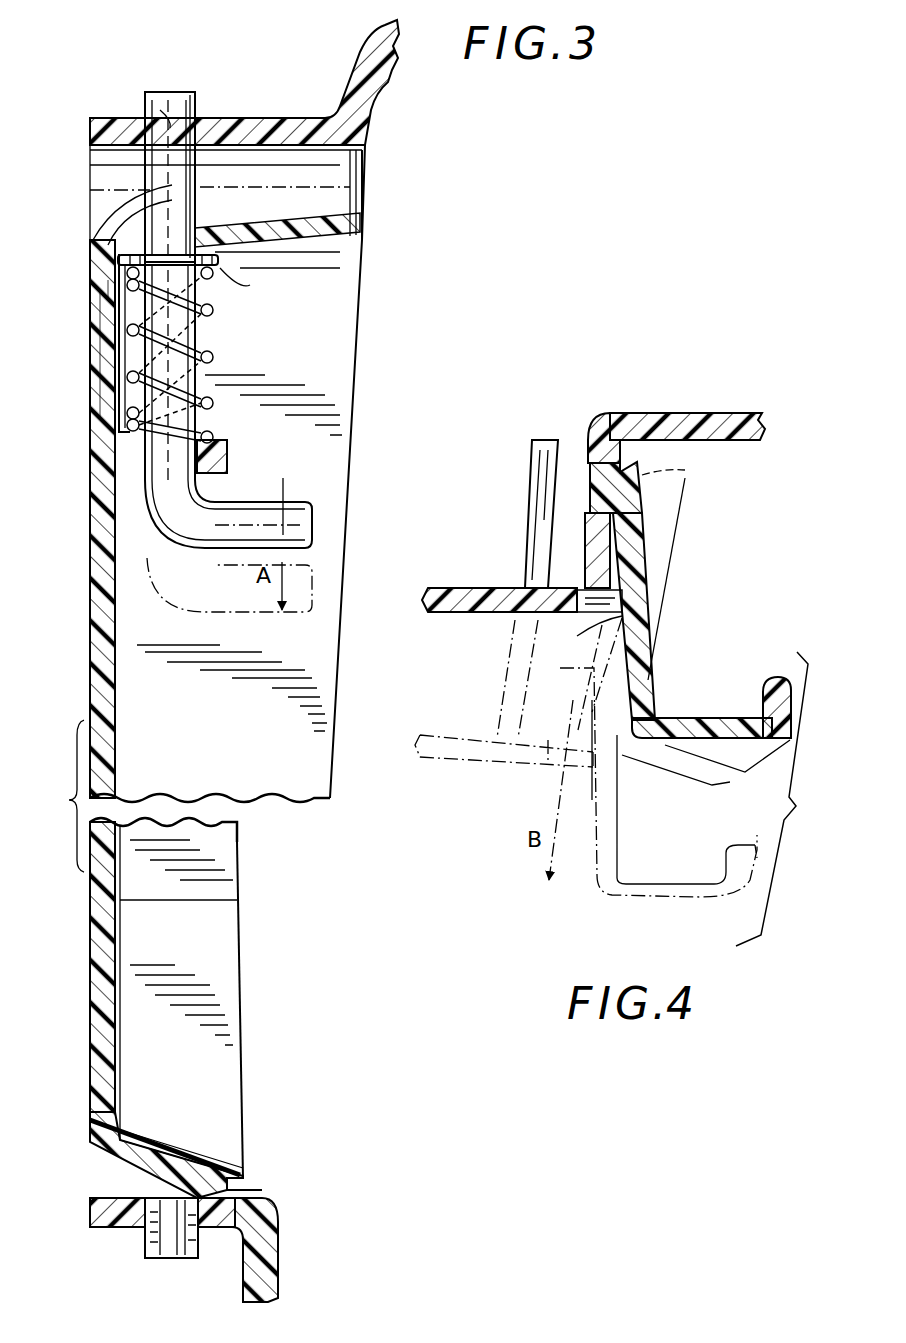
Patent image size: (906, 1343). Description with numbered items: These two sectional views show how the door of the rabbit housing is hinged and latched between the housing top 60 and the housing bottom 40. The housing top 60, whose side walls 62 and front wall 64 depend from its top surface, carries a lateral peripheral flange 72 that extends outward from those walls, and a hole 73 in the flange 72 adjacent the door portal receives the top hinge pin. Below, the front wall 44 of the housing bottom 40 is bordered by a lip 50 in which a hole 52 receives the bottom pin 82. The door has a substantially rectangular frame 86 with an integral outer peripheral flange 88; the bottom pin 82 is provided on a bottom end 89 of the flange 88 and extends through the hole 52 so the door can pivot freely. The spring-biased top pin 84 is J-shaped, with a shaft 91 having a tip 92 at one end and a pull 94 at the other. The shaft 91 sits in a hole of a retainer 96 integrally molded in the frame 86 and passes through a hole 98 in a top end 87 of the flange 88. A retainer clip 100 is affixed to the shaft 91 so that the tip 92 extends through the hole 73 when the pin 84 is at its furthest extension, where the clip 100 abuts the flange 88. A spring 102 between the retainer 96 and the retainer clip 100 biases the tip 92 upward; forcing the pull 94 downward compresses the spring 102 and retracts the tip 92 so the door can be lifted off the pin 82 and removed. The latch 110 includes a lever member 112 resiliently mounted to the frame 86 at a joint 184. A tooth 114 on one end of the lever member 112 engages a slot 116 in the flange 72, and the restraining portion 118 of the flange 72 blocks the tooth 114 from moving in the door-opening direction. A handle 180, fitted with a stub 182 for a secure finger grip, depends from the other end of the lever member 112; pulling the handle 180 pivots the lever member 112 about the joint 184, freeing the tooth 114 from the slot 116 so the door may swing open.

In FIG. 3, the housing bottom 40 is at (278, 1300).
In FIG. 3, the front wall 44 is at (265, 1262).
In FIG. 3, the lip 50 is at (92, 1212).
In FIG. 3, the hole 52 is at (200, 1245).
In FIG. 3, the housing top 60 is at (375, 24).
In FIG. 3, the side walls 62 is at (360, 104).
In FIG. 4, the front wall 64 is at (720, 412).
In FIG. 3, the lateral peripheral flange 72 is at (276, 125).
In FIG. 4, the lateral peripheral flange 72 is at (604, 425).
In FIG. 3, the hole 73 is at (197, 110).
In FIG. 3, the bottom pin 82 is at (150, 1243).
In FIG. 3, the top pin 84 is at (150, 187).
In FIG. 3, the frame 86 is at (92, 549).
In FIG. 4, the frame 86 is at (470, 612).
In FIG. 3, the top end 87 is at (360, 197).
In FIG. 3, the outer peripheral flange 88 is at (355, 239).
In FIG. 4, the outer peripheral flange 88 is at (537, 507).
In FIG. 3, the bottom end 89 is at (245, 1187).
In FIG. 3, the shaft 91 is at (160, 125).
In FIG. 3, the tip 92 is at (168, 90).
In FIG. 3, the pull 94 is at (305, 525).
In FIG. 3, the retainer 96 is at (215, 455).
In FIG. 3, the hole 98 is at (110, 228).
In FIG. 3, the retainer clip 100 is at (218, 268).
In FIG. 3, the spring 102 is at (213, 356).
In FIG. 4, the latch 110 is at (786, 799).
In FIG. 4, the lever member 112 is at (648, 668).
In FIG. 4, the tooth 114 is at (640, 474).
In FIG. 4, the slot 116 is at (591, 470).
In FIG. 4, the restraining portion 118 is at (586, 515).
In FIG. 4, the handle 180 is at (700, 716).
In FIG. 4, the stub 182 is at (776, 676).
In FIG. 4, the joint 184 is at (578, 619).